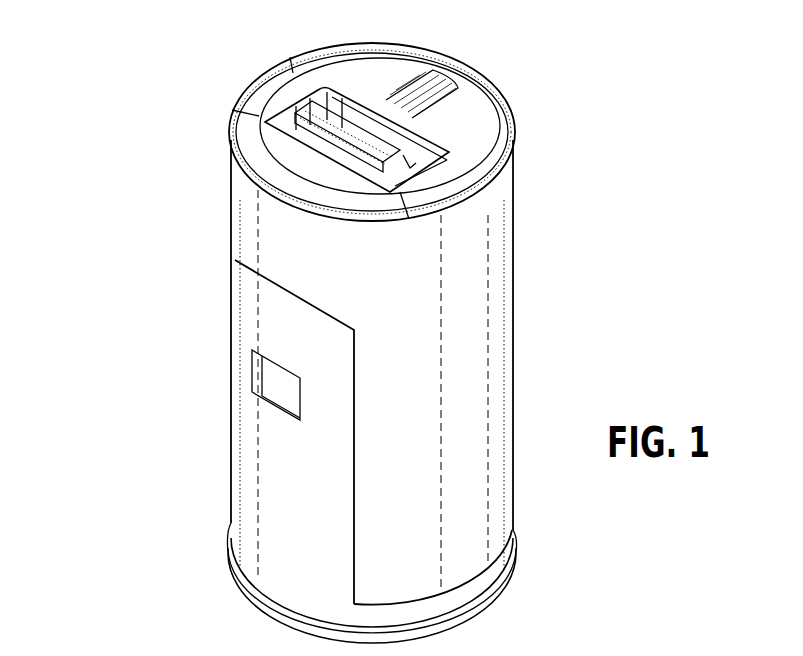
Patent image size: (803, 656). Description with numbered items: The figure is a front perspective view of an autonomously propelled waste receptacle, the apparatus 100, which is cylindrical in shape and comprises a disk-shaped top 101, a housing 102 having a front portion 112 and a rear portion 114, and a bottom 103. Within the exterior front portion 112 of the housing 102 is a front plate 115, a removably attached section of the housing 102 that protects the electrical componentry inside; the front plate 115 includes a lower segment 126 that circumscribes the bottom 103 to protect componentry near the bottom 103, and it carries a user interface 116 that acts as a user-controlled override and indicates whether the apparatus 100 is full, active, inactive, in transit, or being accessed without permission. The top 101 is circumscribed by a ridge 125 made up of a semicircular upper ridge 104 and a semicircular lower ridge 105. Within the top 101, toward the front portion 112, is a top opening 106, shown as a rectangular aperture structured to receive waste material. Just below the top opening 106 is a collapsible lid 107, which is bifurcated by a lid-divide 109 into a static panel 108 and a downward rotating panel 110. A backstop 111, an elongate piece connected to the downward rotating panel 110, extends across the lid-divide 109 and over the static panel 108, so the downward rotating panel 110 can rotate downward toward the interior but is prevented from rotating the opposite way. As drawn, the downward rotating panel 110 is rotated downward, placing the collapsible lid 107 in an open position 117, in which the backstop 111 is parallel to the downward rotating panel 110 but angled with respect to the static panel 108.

The apparatus 100 is at (78, 100).
The top 101 is at (436, 96).
The housing 102 is at (473, 327).
The bottom 103 is at (483, 610).
The semicircular upper ridge 104 is at (294, 70).
The semicircular lower ridge 105 is at (240, 121).
The top opening 106 is at (233, 147).
The collapsible lid 107 is at (362, 118).
The static panel 108 is at (372, 597).
The lid-divide 109 is at (264, 76).
The downward rotating panel 110 is at (302, 172).
The backstop 111 is at (428, 118).
The front portion 112 is at (297, 265).
The rear portion 114 is at (513, 247).
The front plate 115 is at (247, 463).
The user interface 116 is at (258, 376).
The open position 117 is at (345, 162).
The ridge 125 is at (494, 100).
The lower segment 126 is at (497, 573).